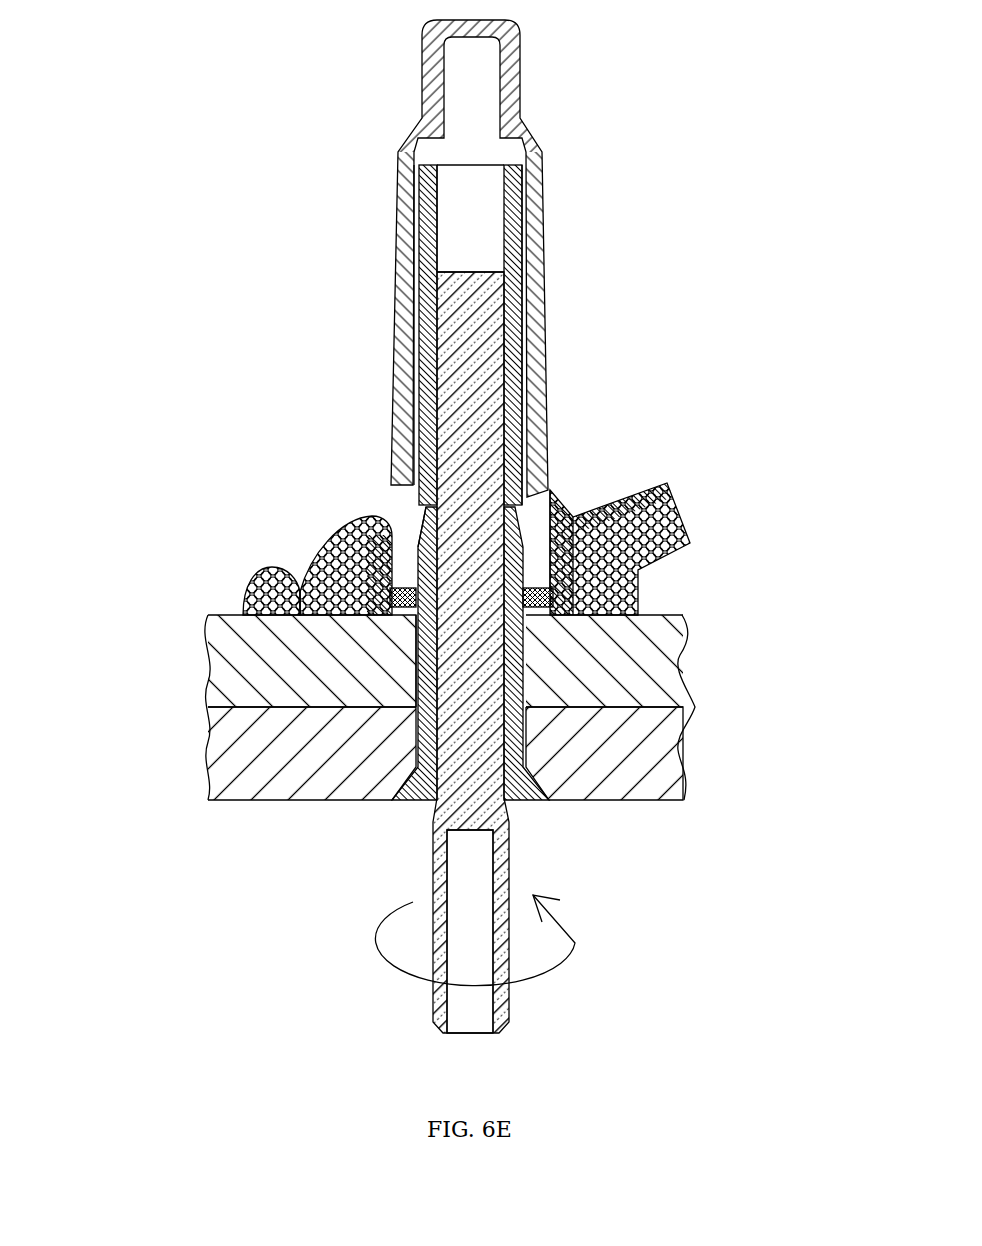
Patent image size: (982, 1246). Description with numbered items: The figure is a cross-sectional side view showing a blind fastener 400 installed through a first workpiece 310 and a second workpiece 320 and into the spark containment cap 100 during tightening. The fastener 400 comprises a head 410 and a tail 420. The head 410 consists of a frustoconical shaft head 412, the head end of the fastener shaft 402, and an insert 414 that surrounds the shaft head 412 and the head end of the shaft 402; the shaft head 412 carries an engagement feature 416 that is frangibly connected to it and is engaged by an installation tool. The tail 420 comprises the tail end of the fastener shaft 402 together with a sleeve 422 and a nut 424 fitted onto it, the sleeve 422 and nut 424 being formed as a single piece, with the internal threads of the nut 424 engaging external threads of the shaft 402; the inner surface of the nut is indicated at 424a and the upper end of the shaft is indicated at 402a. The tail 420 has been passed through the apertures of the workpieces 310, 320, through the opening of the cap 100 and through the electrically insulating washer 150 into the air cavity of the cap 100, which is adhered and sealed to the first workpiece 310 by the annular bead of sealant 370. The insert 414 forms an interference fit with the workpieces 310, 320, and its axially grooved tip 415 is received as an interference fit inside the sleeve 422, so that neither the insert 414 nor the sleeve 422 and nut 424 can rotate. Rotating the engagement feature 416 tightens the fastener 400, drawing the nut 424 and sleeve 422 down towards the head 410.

The spark containment cap 100 is at (516, 32).
The nut 424 is at (513, 210).
The sleeve inner surface 424a is at (436, 183).
The sleeve 422 is at (521, 422).
The tail 420 is at (412, 272).
The fastener shaft 402 is at (482, 387).
The fastener head 402a is at (437, 358).
The blind fastener 400 is at (534, 518).
The axially grooved tip 415 is at (433, 517).
The annular bead of sealant 370 is at (353, 535).
The washer 150 is at (416, 606).
The first workpiece 310 is at (688, 633).
The second workpiece 320 is at (688, 762).
The frustoconical shaft head 412 is at (415, 798).
The insert 414 is at (542, 798).
The engagement feature 416 is at (508, 997).
The head 410 is at (571, 878).